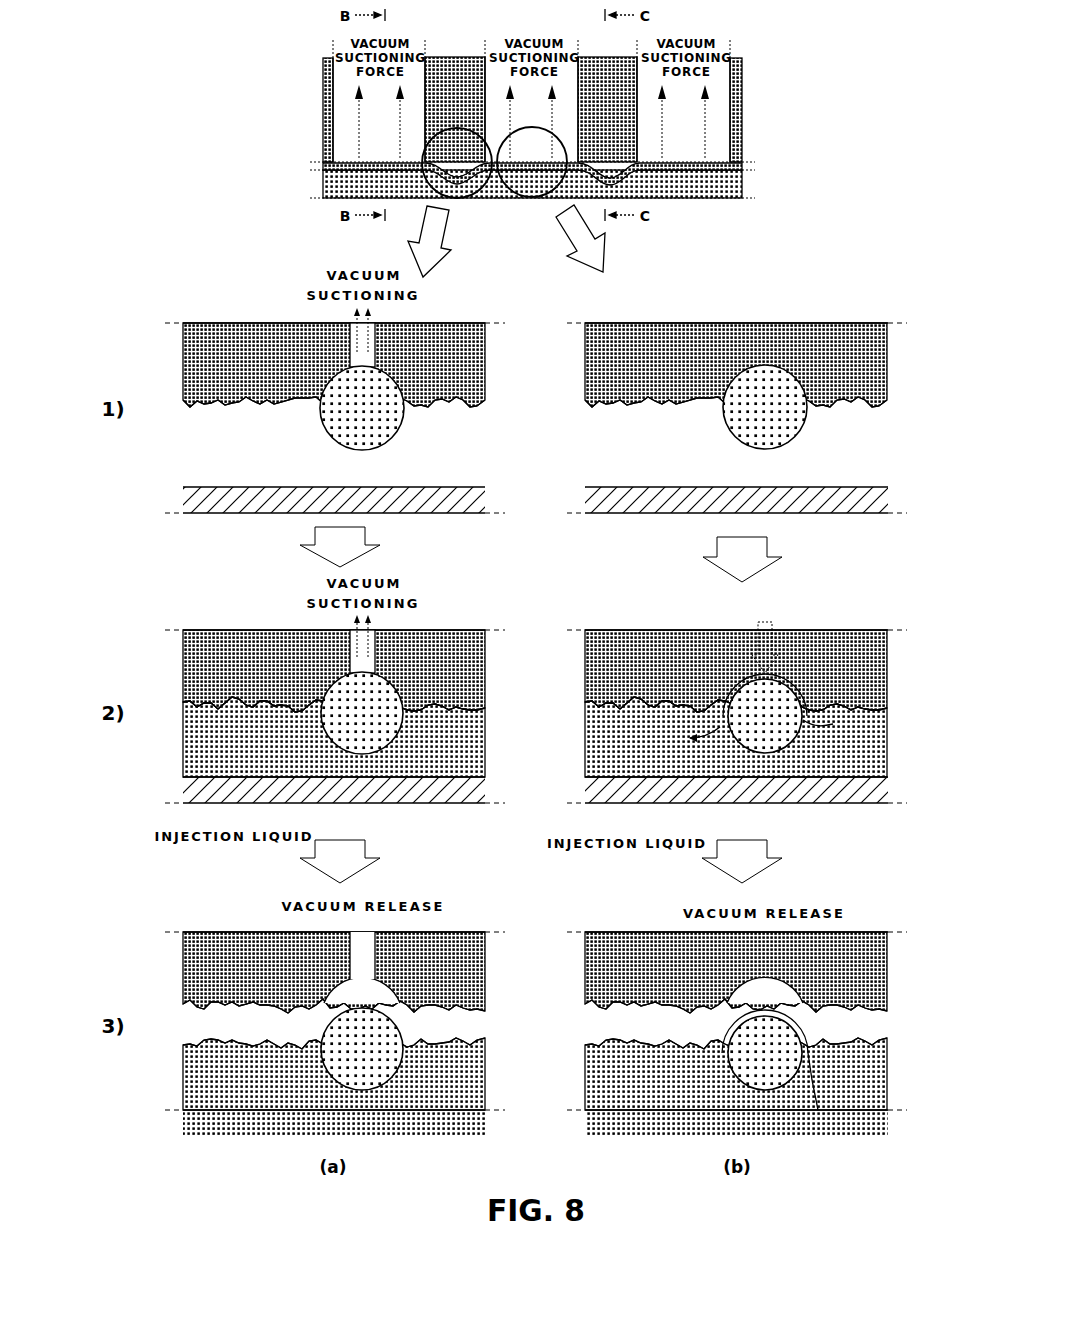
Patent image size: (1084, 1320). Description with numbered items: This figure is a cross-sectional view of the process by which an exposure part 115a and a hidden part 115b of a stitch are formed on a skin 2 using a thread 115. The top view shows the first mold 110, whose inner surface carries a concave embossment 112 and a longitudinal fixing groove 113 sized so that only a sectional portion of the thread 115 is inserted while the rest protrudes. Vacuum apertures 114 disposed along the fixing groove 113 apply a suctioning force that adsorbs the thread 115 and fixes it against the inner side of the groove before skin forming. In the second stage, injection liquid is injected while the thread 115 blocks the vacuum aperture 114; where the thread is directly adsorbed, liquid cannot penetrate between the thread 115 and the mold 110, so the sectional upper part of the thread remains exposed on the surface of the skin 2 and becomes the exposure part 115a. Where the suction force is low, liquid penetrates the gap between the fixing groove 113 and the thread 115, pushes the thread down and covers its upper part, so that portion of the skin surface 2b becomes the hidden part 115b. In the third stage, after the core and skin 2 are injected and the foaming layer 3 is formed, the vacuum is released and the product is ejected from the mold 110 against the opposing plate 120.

The first mold 110 is at (316, 118).
The embossment 112 is at (260, 395).
The fixing groove 113 is at (393, 393).
The vacuum aperture 114 is at (330, 90).
The thread 115 is at (457, 180).
The exposure part 115a is at (345, 170).
The hidden part 115b is at (422, 174).
The plate 120 is at (426, 520).
The skin 2 is at (723, 183).
The surface of injection liquid 2b is at (245, 1018).
The foaming layer 3 is at (217, 1123).